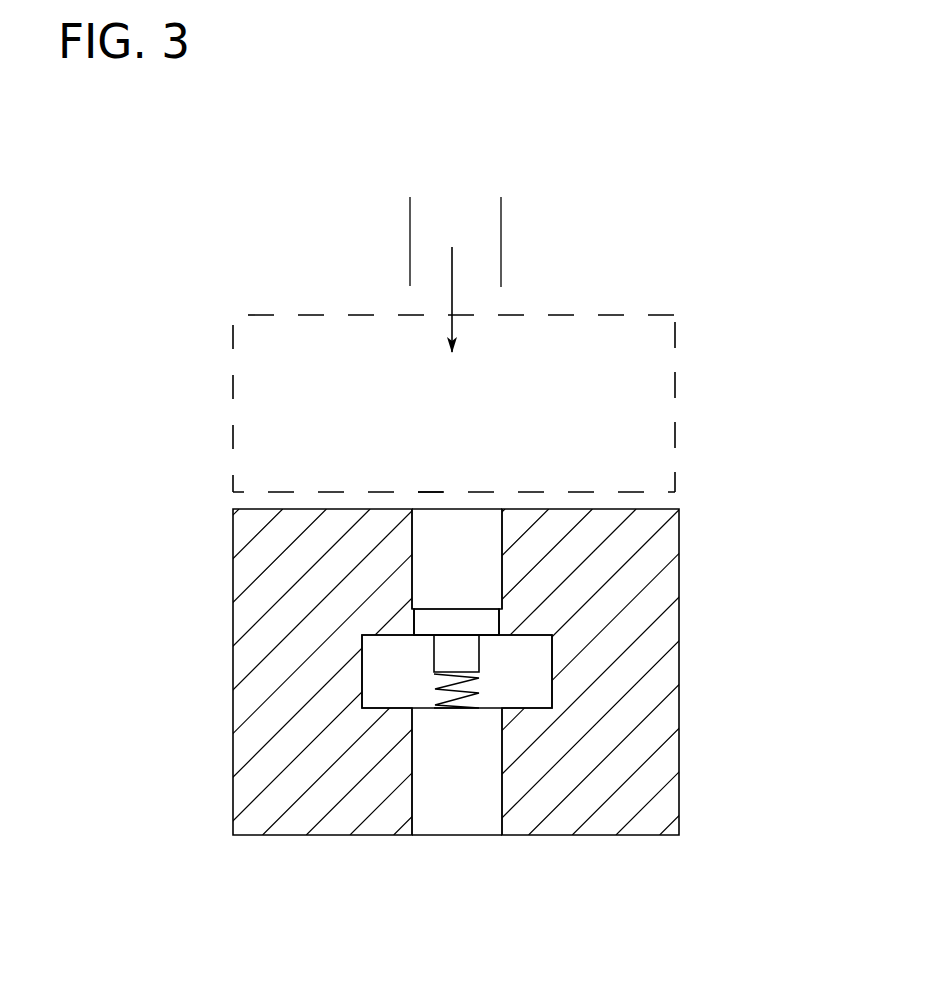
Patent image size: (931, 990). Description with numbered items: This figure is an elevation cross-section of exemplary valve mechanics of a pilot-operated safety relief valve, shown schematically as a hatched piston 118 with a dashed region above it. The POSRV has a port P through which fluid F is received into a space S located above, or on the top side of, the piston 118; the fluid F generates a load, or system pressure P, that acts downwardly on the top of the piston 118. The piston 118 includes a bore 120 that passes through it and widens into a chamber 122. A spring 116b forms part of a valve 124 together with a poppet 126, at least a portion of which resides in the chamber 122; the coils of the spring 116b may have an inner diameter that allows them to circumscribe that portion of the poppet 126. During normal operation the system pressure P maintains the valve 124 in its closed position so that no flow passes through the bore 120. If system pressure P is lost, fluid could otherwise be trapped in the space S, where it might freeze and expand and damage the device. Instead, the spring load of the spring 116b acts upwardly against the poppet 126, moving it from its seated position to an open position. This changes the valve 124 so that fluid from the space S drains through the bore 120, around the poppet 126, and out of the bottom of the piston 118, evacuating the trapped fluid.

The piston 118 is at (679, 539).
The bore 120 is at (444, 489).
The chamber 122 is at (554, 661).
The valve 124 is at (407, 658).
The poppet 126 is at (414, 609).
The spring 116b is at (455, 716).
The port / system pressure P is at (424, 176).
The fluid F is at (493, 299).
The space S is at (454, 403).